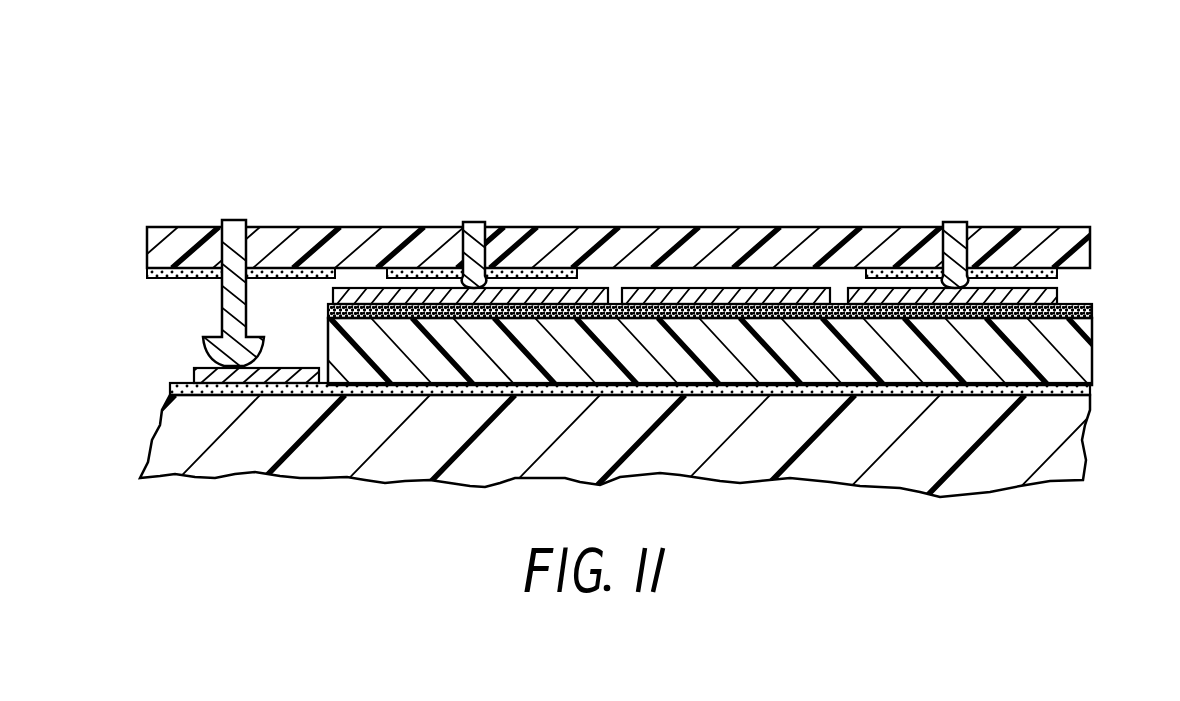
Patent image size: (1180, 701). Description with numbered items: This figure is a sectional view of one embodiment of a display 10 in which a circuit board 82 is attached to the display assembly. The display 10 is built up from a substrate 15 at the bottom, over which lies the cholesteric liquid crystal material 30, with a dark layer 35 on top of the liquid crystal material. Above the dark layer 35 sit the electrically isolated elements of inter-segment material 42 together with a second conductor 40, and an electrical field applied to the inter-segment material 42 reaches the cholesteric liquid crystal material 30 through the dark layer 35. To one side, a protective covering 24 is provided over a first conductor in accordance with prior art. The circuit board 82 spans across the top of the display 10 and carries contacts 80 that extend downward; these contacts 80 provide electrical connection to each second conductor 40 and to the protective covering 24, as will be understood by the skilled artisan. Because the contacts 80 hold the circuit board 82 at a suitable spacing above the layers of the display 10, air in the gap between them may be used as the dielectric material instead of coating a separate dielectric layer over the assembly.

The display 10 is at (270, 166).
The substrate 15 is at (168, 435).
The protective covering 24 is at (193, 375).
The cholesteric liquid crystal material 30 is at (1092, 362).
The dark layer 35 is at (1092, 310).
The second conductor 40 is at (880, 295).
The inter-segment material 42 is at (710, 290).
The contacts 80 is at (468, 223).
The circuit board 82 is at (162, 243).